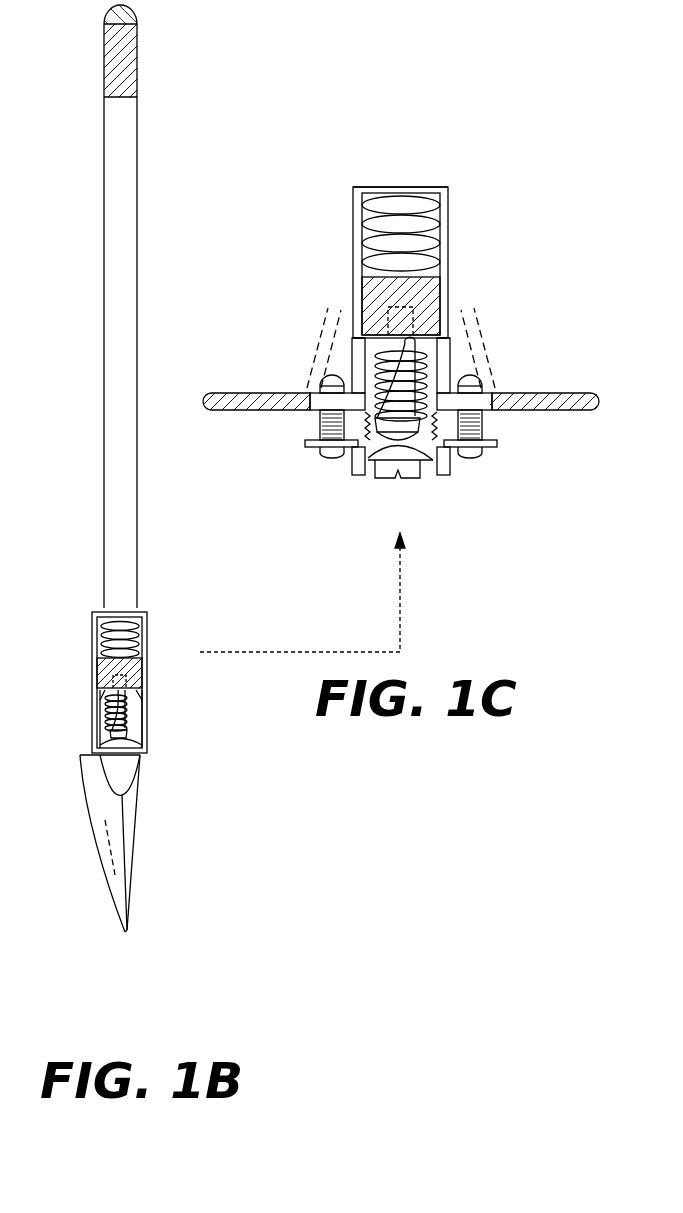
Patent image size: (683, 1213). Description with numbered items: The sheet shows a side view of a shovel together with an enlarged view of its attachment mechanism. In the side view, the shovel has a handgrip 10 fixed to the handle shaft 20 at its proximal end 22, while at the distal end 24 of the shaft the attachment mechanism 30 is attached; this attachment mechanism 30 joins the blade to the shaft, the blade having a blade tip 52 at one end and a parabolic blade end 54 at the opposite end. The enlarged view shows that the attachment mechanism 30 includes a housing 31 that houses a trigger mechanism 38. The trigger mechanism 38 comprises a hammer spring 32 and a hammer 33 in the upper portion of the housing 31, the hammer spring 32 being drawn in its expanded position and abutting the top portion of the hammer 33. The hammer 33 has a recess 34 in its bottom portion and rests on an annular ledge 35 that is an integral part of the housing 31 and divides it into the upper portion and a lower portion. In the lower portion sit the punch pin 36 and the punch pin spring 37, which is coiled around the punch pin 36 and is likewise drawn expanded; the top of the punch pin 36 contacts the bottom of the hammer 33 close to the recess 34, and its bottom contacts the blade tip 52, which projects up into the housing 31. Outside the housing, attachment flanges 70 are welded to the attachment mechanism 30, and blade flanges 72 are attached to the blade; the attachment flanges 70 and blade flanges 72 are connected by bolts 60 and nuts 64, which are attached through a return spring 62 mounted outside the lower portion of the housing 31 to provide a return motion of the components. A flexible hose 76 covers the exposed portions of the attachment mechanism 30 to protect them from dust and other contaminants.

In FIG. 1B, the handgrip 10 is at (104, 68).
In FIG. 1B, the handle shaft 20 is at (104, 306).
In FIG. 1B, the proximal end 22 is at (138, 150).
In FIG. 1B, the distal end 24 is at (138, 563).
In FIG. 1B, the attachment mechanism 30 is at (92, 650).
In FIG. 1C, the attachment mechanism 30 is at (470, 196).
In FIG. 1C, the housing 31 is at (370, 187).
In FIG. 1C, the hammer spring 32 is at (362, 224).
In FIG. 1C, the hammer 33 is at (362, 291).
In FIG. 1C, the recess 34 is at (408, 322).
In FIG. 1C, the annular ledge 35 is at (440, 346).
In FIG. 1C, the punch pin 36 is at (388, 436).
In FIG. 1C, the punch pin spring 37 is at (368, 360).
In FIG. 1C, the trigger mechanism 38 is at (432, 368).
In FIG. 1B, the blade tip 52 is at (136, 743).
In FIG. 1C, the blade tip 52 is at (426, 464).
In FIG. 1B, the blade end 54 is at (125, 935).
In FIG. 1C, the bolt 60 is at (326, 376).
In FIG. 1B, the return spring 62 is at (5, 779).
In FIG. 1C, the return spring 62 is at (320, 425).
In FIG. 1C, the nut 64 is at (330, 460).
In FIG. 1C, the attachment flange 70 is at (310, 396).
In FIG. 1C, the blade flange 72 is at (305, 444).
In FIG. 1C, the flexible hose 76 is at (368, 430).